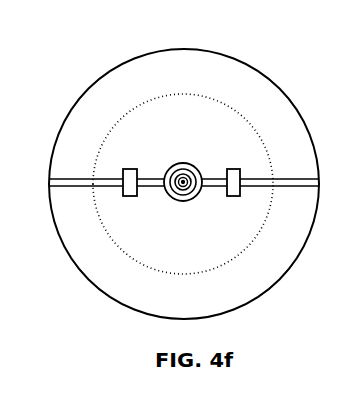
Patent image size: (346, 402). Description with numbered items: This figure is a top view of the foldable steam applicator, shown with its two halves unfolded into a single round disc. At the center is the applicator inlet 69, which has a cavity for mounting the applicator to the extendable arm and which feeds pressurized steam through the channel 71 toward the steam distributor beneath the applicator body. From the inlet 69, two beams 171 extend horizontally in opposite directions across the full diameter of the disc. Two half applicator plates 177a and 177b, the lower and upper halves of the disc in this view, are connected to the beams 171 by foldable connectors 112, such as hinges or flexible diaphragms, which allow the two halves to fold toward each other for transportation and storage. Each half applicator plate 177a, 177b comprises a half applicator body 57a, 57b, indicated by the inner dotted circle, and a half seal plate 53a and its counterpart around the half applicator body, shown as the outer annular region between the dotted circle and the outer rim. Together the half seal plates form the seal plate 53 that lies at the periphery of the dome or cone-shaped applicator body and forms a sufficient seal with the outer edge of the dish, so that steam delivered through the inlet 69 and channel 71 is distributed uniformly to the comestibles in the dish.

The half applicator plate 177b is at (283, 91).
The half applicator plate 177a is at (275, 278).
The half applicator body 57b is at (165, 140).
The half applicator body 57a is at (166, 246).
The seal plate 53 is at (200, 78).
The half seal plate 53a is at (208, 306).
The beam 171 is at (262, 188).
The foldable connector 112 is at (223, 204).
The applicator inlet 69 is at (198, 168).
The channel 71 is at (185, 169).